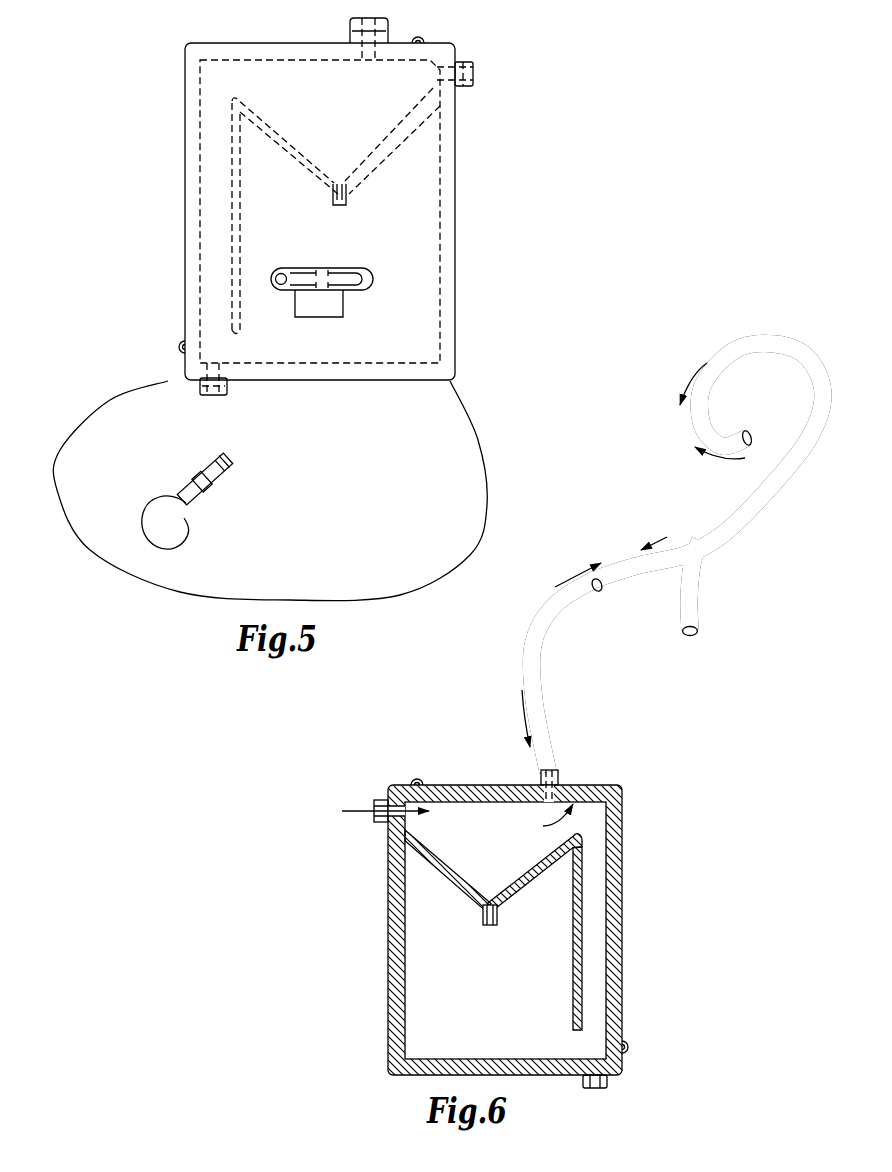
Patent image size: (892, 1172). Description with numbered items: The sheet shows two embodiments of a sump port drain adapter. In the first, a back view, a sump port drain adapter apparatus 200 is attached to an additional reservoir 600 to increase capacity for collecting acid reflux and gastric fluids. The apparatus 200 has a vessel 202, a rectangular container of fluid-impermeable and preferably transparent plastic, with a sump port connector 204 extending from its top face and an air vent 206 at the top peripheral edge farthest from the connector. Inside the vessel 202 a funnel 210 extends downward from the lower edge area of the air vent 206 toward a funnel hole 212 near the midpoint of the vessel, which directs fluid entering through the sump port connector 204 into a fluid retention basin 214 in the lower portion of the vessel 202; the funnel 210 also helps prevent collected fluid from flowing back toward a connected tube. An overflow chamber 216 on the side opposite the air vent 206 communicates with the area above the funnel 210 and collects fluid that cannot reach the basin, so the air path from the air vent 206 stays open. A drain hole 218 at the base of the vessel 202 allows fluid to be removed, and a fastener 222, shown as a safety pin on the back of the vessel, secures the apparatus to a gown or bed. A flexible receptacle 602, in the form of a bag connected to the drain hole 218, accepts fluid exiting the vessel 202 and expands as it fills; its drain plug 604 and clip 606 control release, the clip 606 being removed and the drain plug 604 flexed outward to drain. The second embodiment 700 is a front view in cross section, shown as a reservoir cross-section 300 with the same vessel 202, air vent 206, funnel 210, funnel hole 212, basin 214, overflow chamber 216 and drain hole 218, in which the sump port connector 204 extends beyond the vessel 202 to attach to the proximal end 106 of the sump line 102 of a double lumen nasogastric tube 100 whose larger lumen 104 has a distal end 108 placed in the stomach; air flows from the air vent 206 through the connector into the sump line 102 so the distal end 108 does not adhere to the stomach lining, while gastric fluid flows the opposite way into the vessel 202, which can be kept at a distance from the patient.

In FIG. 6, the nasogastric tube 100 is at (797, 328).
In FIG. 6, the sump line 102 is at (618, 565).
In FIG. 6, the larger lumen 104 is at (753, 510).
In FIG. 6, the proximal end 106 is at (700, 623).
In FIG. 6, the distal end 108 is at (750, 434).
In FIG. 5, the sump port drain adapter apparatus 200 is at (126, 72).
In FIG. 5, the vessel 202 is at (227, 43).
In FIG. 6, the vessel 202 is at (492, 784).
In FIG. 5, the sump port connector 204 is at (350, 30).
In FIG. 6, the sump port connector 204 is at (572, 604).
In FIG. 5, the air vent 206 is at (468, 86).
In FIG. 6, the air vent 206 is at (387, 823).
In FIG. 5, the funnel 210 is at (397, 145).
In FIG. 6, the funnel 210 is at (440, 870).
In FIG. 5, the funnel hole 212 is at (330, 197).
In FIG. 6, the funnel hole 212 is at (482, 920).
In FIG. 5, the fluid retention basin 214 is at (403, 250).
In FIG. 6, the fluid retention basin 214 is at (467, 1033).
In FIG. 5, the overflow chamber 216 is at (225, 172).
In FIG. 6, the overflow chamber 216 is at (593, 953).
In FIG. 5, the drain hole 218 is at (226, 391).
In FIG. 6, the drain hole 218 is at (607, 1082).
In FIG. 5, the fastener 222 is at (360, 285).
In FIG. 6, the reservoir cross-section 300 is at (344, 777).
In FIG. 5, the additional reservoir 600 is at (73, 396).
In FIG. 5, the flexible receptacle 602 is at (100, 401).
In FIG. 5, the drain plug 604 is at (177, 529).
In FIG. 5, the clip 606 is at (232, 463).
In FIG. 6, the embodiment 700 is at (682, 698).